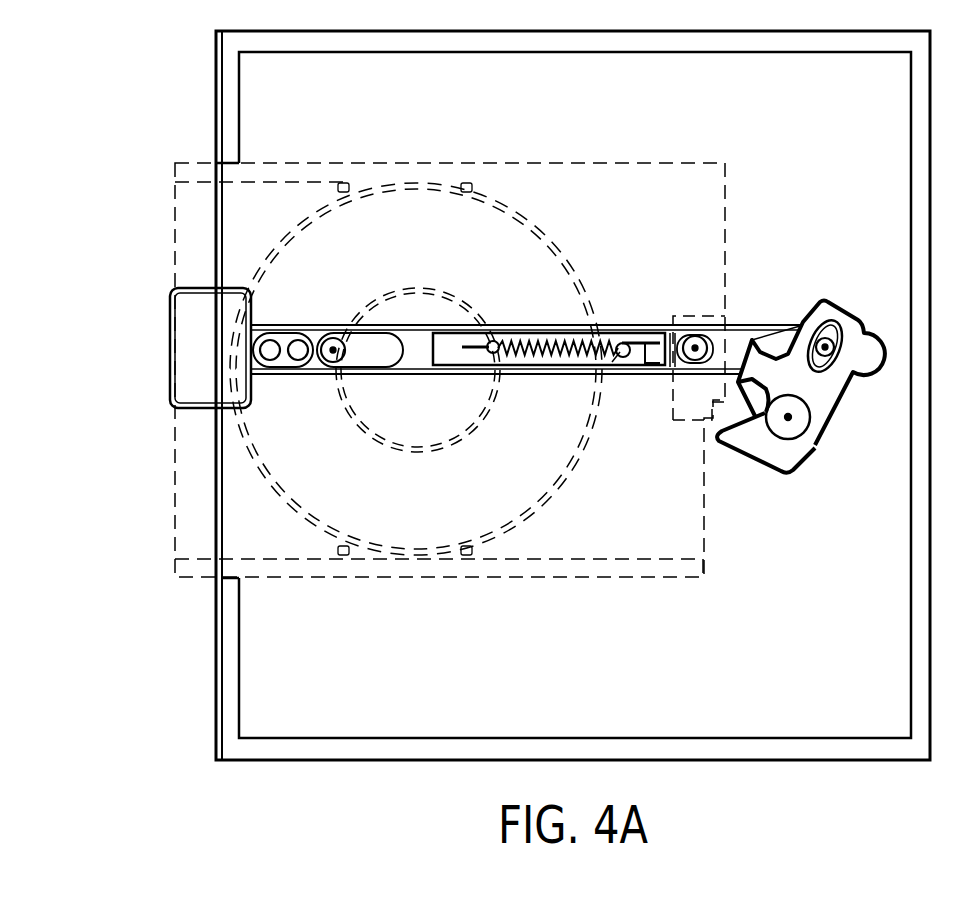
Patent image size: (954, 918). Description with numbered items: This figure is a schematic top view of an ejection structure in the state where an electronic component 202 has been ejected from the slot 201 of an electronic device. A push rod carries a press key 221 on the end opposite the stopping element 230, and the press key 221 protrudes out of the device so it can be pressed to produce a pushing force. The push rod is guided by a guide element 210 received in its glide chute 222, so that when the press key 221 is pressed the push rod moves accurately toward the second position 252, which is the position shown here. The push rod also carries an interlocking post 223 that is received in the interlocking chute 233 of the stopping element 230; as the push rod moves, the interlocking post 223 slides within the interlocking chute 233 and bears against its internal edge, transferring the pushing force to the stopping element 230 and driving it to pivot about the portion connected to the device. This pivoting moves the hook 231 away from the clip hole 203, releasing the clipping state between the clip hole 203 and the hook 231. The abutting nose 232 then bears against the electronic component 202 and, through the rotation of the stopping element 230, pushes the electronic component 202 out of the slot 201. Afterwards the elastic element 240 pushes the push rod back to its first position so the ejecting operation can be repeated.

The slot 201 is at (216, 163).
The electronic component 202 is at (617, 164).
The clip hole 203 is at (673, 318).
The guide element 210 is at (330, 372).
The press key 221 is at (186, 363).
The glide chute 222 is at (357, 320).
The interlocking post 223 is at (807, 323).
The stopping element 230 is at (820, 305).
The hook 231 is at (723, 326).
The abutting nose 232 is at (718, 440).
The interlocking chute 233 is at (836, 392).
The elastic element 240 is at (542, 366).
The second position 252 is at (881, 320).